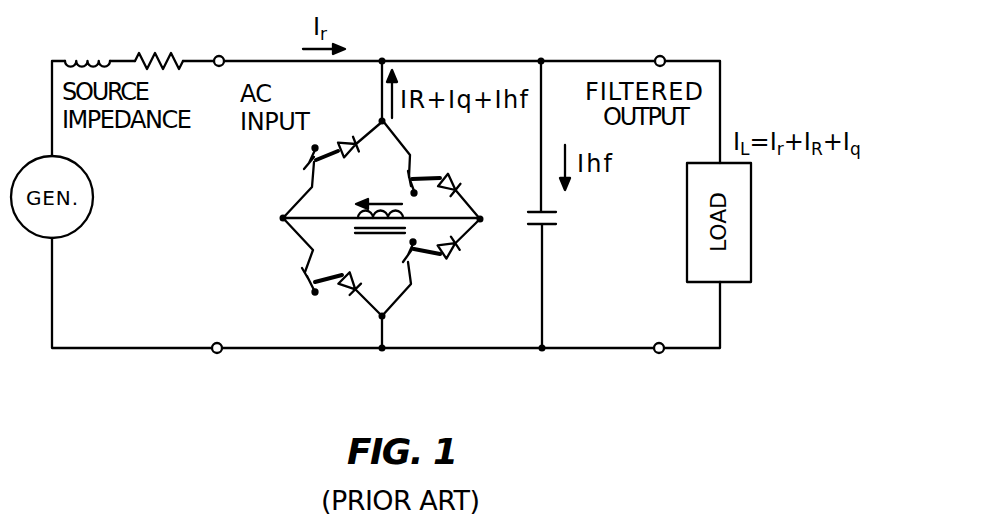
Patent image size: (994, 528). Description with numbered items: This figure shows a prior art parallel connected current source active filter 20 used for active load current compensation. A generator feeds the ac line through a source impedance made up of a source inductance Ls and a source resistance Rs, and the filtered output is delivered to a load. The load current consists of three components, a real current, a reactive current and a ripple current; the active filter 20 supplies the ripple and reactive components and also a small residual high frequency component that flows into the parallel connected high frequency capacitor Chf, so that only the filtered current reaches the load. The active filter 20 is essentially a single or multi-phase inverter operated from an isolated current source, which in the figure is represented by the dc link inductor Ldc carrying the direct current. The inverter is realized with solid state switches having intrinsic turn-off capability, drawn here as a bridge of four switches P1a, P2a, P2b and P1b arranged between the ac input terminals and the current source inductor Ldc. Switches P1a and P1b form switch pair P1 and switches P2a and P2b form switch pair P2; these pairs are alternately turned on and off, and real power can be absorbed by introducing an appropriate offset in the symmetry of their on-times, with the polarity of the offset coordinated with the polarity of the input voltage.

The parallel connected current source active filter 20 is at (325, 218).
The source inductance Ls is at (87, 46).
The source resistance Rs is at (159, 47).
The high frequency capacitor Chf is at (564, 204).
The DC load inductor Ldc is at (377, 236).
The switch P1a is at (319, 169).
The switch P2a is at (431, 170).
The switch P1b is at (431, 267).
The switch P2b is at (322, 267).